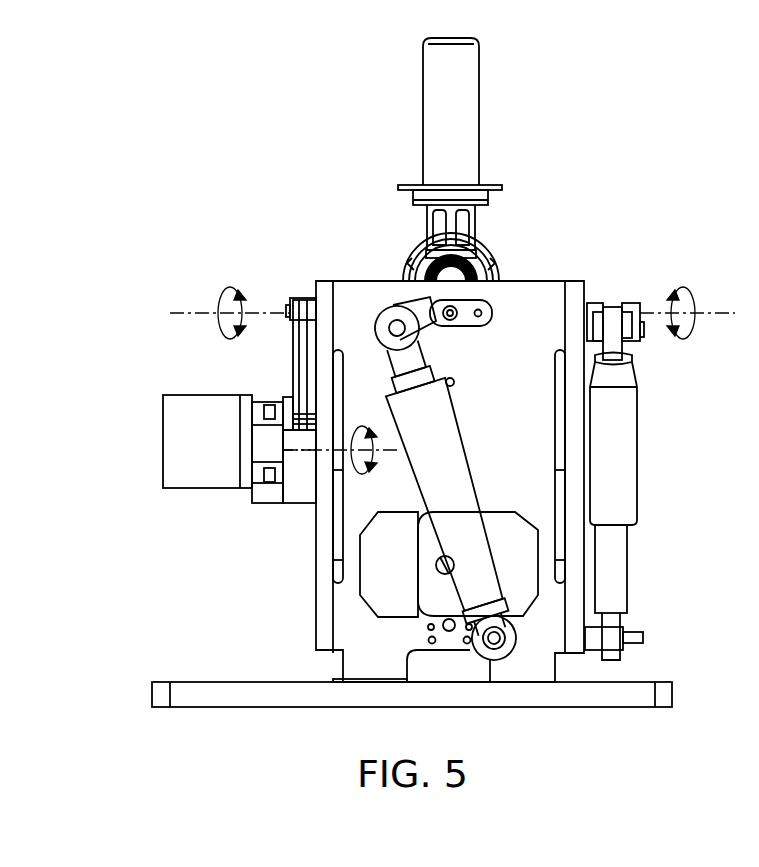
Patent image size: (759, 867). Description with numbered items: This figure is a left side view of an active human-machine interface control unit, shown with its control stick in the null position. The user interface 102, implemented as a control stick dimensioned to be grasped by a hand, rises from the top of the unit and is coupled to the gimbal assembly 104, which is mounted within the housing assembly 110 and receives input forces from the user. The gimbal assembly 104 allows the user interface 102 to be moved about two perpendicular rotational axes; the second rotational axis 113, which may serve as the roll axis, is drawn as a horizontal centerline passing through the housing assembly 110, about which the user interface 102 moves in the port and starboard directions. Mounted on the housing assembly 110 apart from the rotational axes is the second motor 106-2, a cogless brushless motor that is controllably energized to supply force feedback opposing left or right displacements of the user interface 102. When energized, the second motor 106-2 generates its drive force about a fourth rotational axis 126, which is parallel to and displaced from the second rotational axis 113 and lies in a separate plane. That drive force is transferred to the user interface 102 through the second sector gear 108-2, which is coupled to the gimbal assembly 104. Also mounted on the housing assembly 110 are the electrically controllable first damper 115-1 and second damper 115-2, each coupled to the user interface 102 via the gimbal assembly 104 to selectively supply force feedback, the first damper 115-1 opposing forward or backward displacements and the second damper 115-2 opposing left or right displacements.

The user interface 102 is at (479, 118).
The gimbal assembly 104 is at (485, 276).
The housing assembly 110 is at (358, 295).
The second rotational axis 113 is at (180, 313).
The second sector gear 108-2 is at (290, 380).
The second motor 106-2 is at (163, 440).
The first damper 115-1 is at (433, 409).
The second damper 115-2 is at (625, 409).
The fourth rotational axis 126 is at (378, 452).